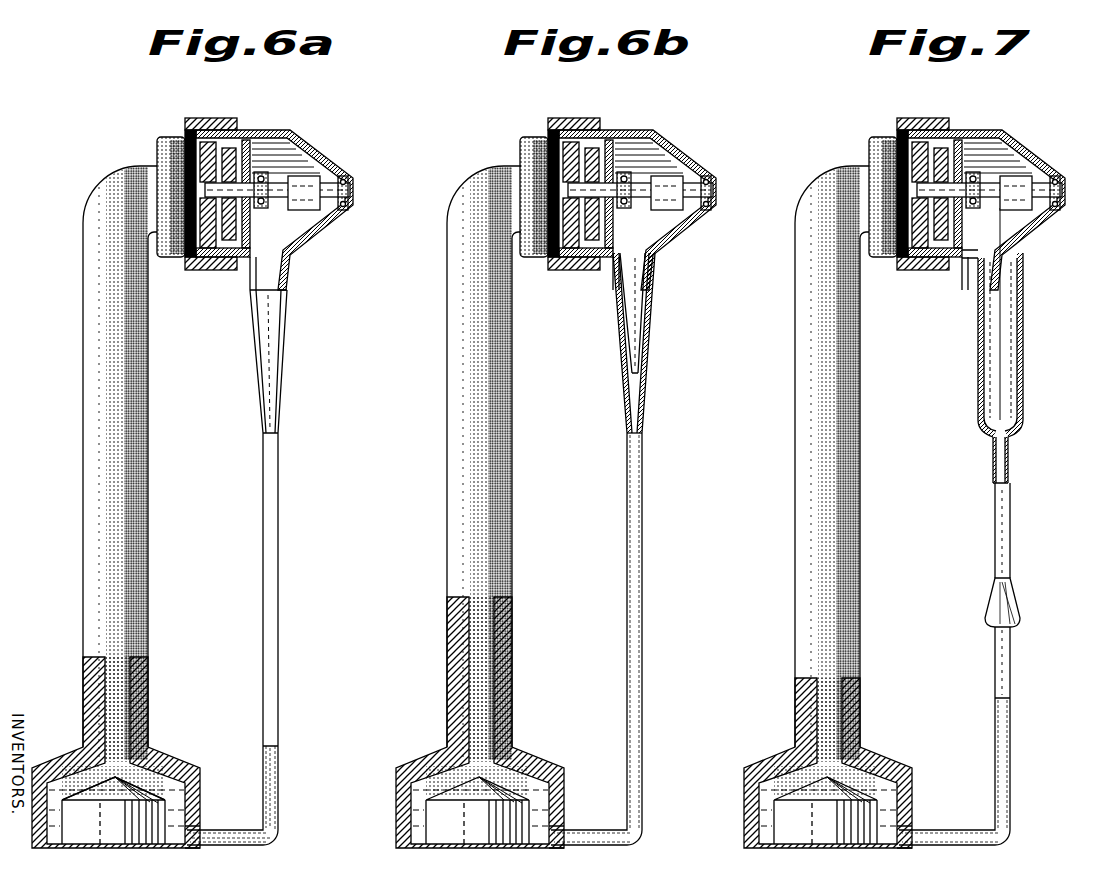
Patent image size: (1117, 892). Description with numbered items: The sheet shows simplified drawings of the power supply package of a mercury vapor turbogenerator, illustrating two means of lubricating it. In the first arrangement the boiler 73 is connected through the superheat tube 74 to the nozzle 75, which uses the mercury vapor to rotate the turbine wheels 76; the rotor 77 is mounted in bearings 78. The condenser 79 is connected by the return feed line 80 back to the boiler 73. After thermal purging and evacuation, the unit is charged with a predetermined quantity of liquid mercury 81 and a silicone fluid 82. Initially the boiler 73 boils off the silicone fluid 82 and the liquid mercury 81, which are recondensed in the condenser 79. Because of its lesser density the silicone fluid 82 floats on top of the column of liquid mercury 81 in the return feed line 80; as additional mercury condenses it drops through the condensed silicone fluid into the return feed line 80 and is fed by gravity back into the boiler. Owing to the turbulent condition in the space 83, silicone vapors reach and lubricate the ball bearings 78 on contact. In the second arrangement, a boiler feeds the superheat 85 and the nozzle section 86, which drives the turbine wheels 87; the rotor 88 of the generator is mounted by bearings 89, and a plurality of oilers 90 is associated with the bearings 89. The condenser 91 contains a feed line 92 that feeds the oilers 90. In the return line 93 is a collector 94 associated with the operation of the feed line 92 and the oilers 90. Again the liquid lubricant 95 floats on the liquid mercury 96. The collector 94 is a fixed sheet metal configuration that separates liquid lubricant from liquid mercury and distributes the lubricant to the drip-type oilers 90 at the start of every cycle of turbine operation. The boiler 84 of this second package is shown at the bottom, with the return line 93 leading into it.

In FIG. 6A, the boiler 73 is at (200, 812).
In FIG. 6B, the boiler 73 is at (396, 800).
In FIG. 6A, the superheat tube 74 is at (83, 573).
In FIG. 6B, the superheat tube 74 is at (447, 580).
In FIG. 6A, the nozzle 75 is at (159, 149).
In FIG. 6B, the nozzle 75 is at (523, 147).
In FIG. 6A, the turbine wheels 76 is at (260, 240).
In FIG. 6B, the turbine wheels 76 is at (565, 197).
In FIG. 6A, the rotor 77 is at (312, 183).
In FIG. 6B, the rotor 77 is at (675, 183).
In FIG. 6A, the bearings 78 is at (268, 175).
In FIG. 6B, the bearings 78 is at (630, 175).
In FIG. 6A, the condenser 79 is at (279, 361).
In FIG. 6B, the condenser 79 is at (650, 322).
In FIG. 6A, the return feed line 80 is at (279, 637).
In FIG. 6B, the return feed line 80 is at (643, 648).
In FIG. 6A, the liquid mercury 81 is at (198, 782).
In FIG. 6B, the liquid mercury 81 is at (565, 797).
In FIG. 6A, the silicone fluid 82 is at (157, 780).
In FIG. 6B, the silicone fluid 82 is at (635, 412).
In FIG. 6B, the space 83 is at (655, 252).
In FIG. 7, the reservoir base 84 is at (743, 800).
In FIG. 7, the superheat 85 is at (795, 537).
In FIG. 7, the nozzle section 86 is at (875, 148).
In FIG. 7, the turbine wheels 87 is at (930, 195).
In FIG. 7, the rotor 88 is at (1022, 183).
In FIG. 7, the bearings 89 is at (1030, 228).
In FIG. 7, the oilers 90 is at (975, 178).
In FIG. 7, the condenser 91 is at (1024, 405).
In FIG. 7, the feed line 92 is at (1020, 342).
In FIG. 7, the return line 93 is at (1010, 503).
In FIG. 7, the collector 94 is at (985, 612).
In FIG. 7, the liquid lubricant 95 is at (1010, 762).
In FIG. 7, the liquid mercury 96 is at (915, 818).